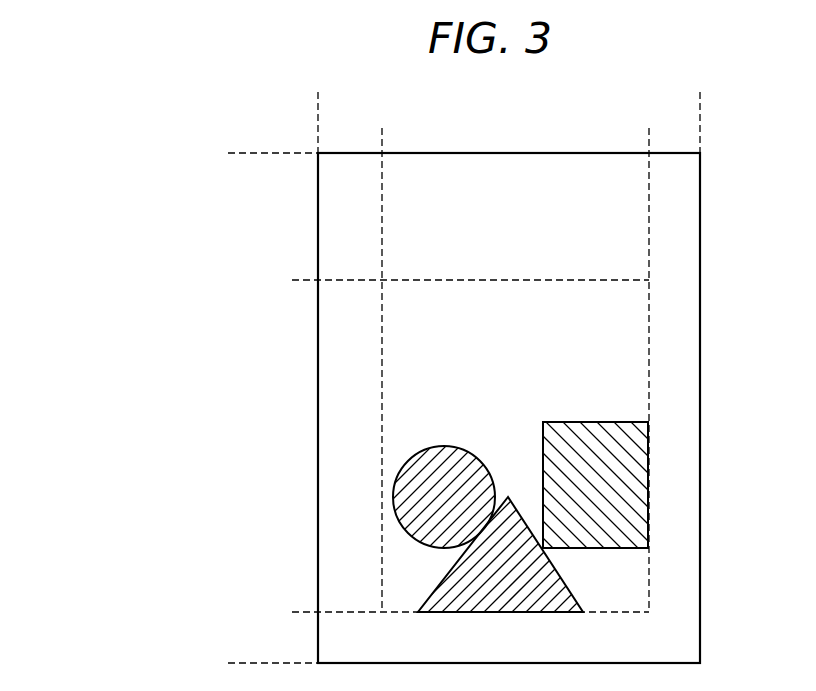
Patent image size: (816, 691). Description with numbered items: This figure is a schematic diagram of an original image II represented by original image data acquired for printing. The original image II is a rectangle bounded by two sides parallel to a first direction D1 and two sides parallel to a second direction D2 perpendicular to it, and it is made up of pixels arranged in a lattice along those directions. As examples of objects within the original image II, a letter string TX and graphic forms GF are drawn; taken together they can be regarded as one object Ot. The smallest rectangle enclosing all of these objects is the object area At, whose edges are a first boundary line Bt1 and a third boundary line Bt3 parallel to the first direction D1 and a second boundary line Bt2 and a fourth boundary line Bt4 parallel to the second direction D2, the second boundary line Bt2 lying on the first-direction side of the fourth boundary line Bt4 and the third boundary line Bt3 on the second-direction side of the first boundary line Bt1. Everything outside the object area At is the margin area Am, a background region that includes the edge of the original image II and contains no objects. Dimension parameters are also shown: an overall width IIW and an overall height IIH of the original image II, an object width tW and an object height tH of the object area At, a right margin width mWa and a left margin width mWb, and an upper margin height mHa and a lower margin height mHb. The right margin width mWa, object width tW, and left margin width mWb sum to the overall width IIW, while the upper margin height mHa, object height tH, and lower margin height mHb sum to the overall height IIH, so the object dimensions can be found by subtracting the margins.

The original image II is at (700, 160).
The overall width IIW is at (318, 103).
The overall height IIH is at (242, 153).
The margin area Am is at (687, 242).
The object area At is at (637, 293).
The letter string TX is at (570, 333).
The graphic forms GF is at (610, 460).
The object Ot is at (752, 332).
The first boundary line Bt1 is at (637, 280).
The second boundary line Bt2 is at (648, 588).
The third boundary line Bt3 is at (622, 612).
The fourth boundary line Bt4 is at (382, 445).
The right margin width mWa is at (690, 145).
The left margin width mWb is at (372, 145).
The object width tW is at (639, 145).
The upper margin height mHa is at (306, 153).
The lower margin height mHb is at (306, 612).
The object height tH is at (306, 280).
The first direction D1 is at (128, 128).
The second direction D2 is at (128, 128).